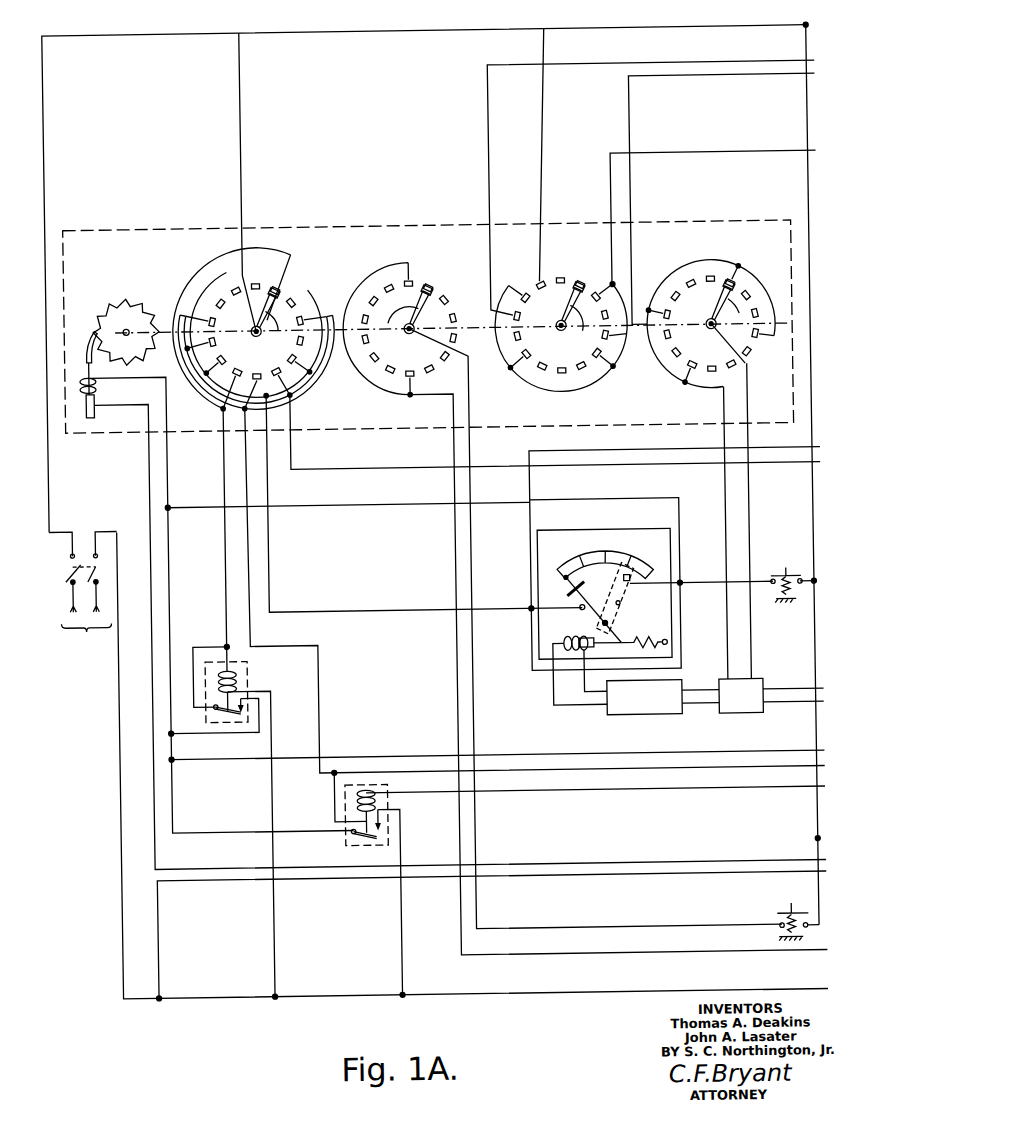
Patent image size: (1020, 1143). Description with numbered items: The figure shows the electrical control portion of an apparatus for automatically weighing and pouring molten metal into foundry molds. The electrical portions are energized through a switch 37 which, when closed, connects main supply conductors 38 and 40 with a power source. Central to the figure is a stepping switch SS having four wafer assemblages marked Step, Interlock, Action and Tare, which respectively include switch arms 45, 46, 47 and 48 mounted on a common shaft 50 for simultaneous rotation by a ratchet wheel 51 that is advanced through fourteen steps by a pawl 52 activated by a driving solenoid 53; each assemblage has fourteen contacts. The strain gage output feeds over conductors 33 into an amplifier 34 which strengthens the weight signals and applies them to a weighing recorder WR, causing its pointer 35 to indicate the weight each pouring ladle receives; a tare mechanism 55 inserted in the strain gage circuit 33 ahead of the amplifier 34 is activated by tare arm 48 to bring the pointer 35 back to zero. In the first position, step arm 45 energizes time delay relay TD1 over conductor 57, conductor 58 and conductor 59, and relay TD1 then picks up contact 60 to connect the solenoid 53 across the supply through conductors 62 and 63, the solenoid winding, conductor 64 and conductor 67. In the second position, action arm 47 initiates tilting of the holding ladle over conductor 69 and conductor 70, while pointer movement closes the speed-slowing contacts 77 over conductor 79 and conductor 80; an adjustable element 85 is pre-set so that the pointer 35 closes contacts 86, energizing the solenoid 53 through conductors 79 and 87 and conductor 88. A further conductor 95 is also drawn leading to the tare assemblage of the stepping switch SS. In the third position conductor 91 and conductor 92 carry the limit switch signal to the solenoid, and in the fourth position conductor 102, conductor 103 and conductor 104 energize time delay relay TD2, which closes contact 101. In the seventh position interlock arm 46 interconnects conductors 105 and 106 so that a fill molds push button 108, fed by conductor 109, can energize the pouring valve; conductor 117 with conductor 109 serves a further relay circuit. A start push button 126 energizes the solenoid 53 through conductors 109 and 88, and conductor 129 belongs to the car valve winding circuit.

The conductors 33 is at (796, 696).
The amplifier 34 is at (652, 716).
The pointer 35 is at (586, 618).
The switch 37 is at (81, 562).
The main supply conductor 38 is at (107, 30).
The main supply conductor 40 is at (236, 995).
The switch arm 45 is at (250, 329).
The switch arm 46 is at (406, 330).
The switch arm 47 is at (561, 327).
The switch arm 48 is at (711, 324).
The common shaft 50 is at (336, 317).
The ratchet wheel 51 is at (128, 294).
The pawl 52 is at (93, 330).
The driving solenoid 53 is at (102, 390).
The tare mechanism 55 is at (728, 685).
The conductor 57 is at (246, 137).
The conductor 58 is at (225, 487).
The conductor 59 is at (268, 803).
The contact 60 is at (215, 707).
The conductor 62 is at (255, 733).
The conductor 63 is at (167, 561).
The conductor 64 is at (152, 863).
The conductor 67 is at (153, 879).
The conductor 69 is at (551, 142).
The conductor 70 is at (802, 156).
The speed-slowing contacts 77 is at (562, 599).
The conductor 79 is at (267, 580).
The conductor 80 is at (527, 494).
The adjustable element 85 is at (619, 615).
The contacts 86 is at (617, 586).
The conductor 87 is at (526, 645).
The conductor 88 is at (340, 506).
The conductor 91 is at (333, 466).
The conductor 92 is at (306, 756).
The tare switch line 95 is at (807, 81).
The contact 101 is at (367, 839).
The conductor 102 is at (316, 646).
The conductor 103 is at (796, 795).
The conductor 104 is at (394, 930).
The conductor 105 is at (477, 703).
The conductor 106 is at (449, 700).
The fill molds push button 108 is at (769, 918).
The conductor 109 is at (812, 194).
The conductor 117 is at (805, 844).
The start push button 126 is at (782, 577).
The conductor 129 is at (812, 68).
The time delay relay TD1 is at (246, 670).
The time delay relay TD2 is at (384, 800).
The weighing recorder WR is at (681, 595).
The stepping switch SS is at (427, 315).